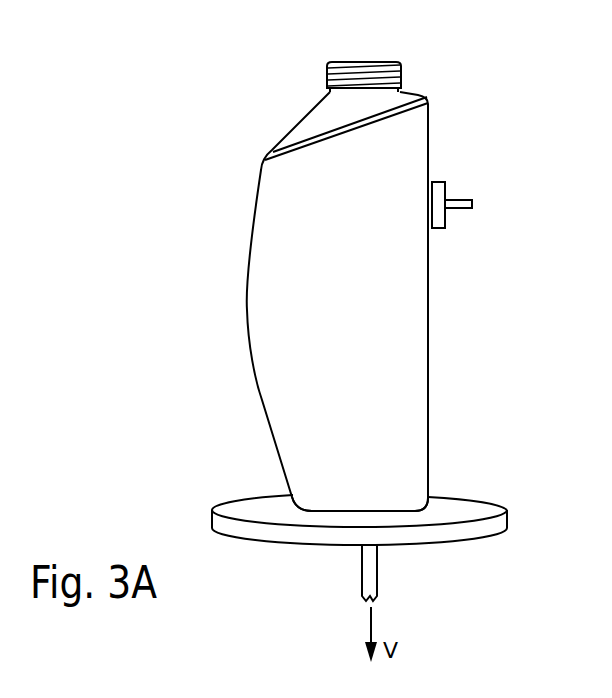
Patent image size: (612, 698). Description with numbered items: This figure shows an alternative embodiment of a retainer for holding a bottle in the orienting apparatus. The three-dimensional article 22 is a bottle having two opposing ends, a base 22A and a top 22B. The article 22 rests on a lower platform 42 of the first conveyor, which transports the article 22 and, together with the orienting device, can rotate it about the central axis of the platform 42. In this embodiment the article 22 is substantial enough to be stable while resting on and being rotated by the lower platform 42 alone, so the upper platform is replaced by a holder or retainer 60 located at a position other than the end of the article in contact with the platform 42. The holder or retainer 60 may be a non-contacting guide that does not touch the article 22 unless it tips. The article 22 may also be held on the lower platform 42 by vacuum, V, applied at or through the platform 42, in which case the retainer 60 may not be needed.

The three-dimensional article 22 is at (216, 120).
The base 22A is at (390, 513).
The top 22B is at (370, 60).
The platform 42 is at (465, 508).
The holder or retainer 60 is at (444, 188).